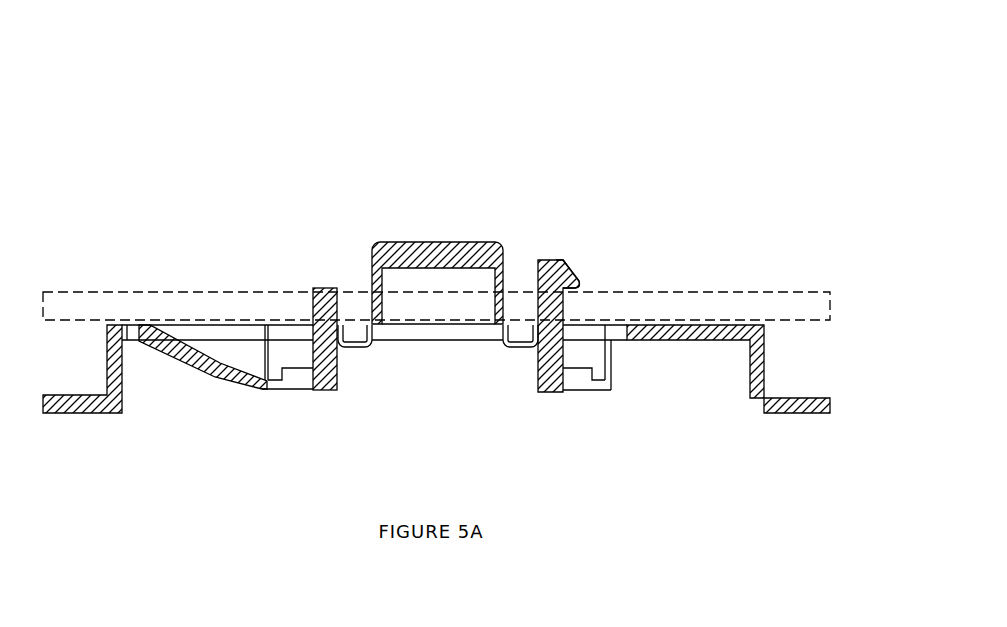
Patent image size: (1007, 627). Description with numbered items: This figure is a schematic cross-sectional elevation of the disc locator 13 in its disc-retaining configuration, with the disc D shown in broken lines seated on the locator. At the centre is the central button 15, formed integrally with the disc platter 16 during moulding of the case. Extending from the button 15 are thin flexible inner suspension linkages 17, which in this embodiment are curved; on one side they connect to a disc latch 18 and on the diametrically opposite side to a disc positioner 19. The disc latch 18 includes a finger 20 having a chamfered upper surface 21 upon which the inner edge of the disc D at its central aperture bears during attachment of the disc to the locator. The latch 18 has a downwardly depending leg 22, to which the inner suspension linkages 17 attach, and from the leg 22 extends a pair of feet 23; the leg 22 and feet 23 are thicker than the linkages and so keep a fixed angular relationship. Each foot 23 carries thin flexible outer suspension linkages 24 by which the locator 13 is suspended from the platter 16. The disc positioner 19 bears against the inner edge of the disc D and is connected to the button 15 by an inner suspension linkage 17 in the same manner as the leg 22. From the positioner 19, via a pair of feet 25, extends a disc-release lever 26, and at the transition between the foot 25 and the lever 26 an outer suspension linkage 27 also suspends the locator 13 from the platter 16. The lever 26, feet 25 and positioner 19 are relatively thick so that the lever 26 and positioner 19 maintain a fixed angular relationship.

The disc locator 13 is at (588, 115).
The central button 15 is at (447, 242).
The disc platter 16 is at (197, 327).
The inner suspension linkage 17 is at (363, 350).
The disc latch 18 is at (562, 261).
The disc positioner 19 is at (325, 288).
The finger 20 is at (580, 283).
The chamfered upper surface 21 is at (570, 271).
The leg 22 is at (538, 384).
The foot 23 is at (578, 380).
The outer suspension linkage 24 is at (611, 358).
The foot 25 is at (298, 386).
The disc-release lever 26 is at (222, 372).
The outer suspension linkage 27 is at (262, 358).
The disc D is at (818, 298).